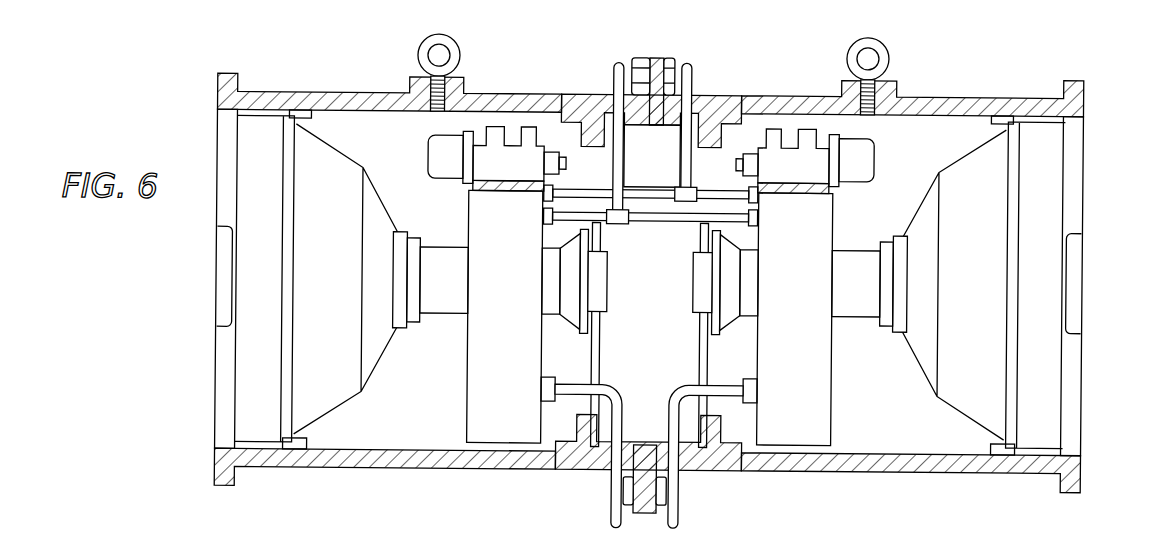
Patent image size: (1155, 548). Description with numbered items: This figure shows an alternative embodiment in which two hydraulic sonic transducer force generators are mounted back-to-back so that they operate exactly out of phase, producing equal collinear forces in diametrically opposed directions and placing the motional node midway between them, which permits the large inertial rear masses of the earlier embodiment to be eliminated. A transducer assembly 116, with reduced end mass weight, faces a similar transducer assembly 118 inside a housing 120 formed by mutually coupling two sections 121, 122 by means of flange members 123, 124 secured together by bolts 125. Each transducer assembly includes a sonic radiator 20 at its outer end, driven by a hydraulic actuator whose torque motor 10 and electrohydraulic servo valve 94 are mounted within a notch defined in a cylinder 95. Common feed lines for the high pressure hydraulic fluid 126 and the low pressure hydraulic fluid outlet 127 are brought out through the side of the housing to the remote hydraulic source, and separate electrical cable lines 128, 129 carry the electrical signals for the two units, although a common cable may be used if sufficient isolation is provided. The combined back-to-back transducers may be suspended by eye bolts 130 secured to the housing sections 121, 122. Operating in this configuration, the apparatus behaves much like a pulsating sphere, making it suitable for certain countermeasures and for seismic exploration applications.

The torque motor 10 is at (458, 170).
The sonic radiator 20 is at (333, 166).
The electrohydraulic servo valve 94 is at (514, 174).
The cylinder 95 is at (514, 349).
The transducer assembly 116 is at (232, 349).
The transducer assembly 118 is at (1083, 173).
The housing 120 is at (585, 92).
The housing section 121 is at (518, 97).
The housing section 122 is at (740, 97).
The flange member 123 is at (643, 62).
The flange member 124 is at (661, 61).
The bolts 125 is at (673, 61).
The high pressure hydraulic fluid feed line 126 is at (613, 64).
The low pressure hydraulic fluid outlet 127 is at (690, 79).
The electrical cable line 128 is at (613, 508).
The electrical cable line 129 is at (681, 502).
The eye bolts 130 is at (883, 56).